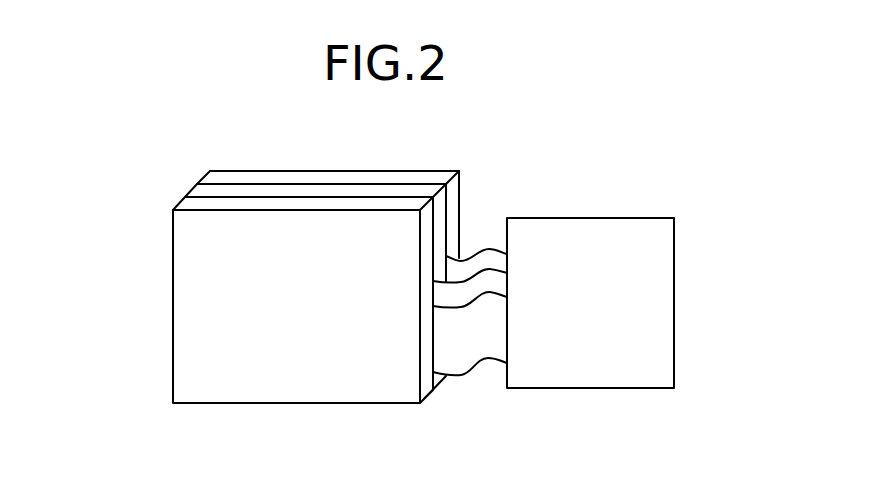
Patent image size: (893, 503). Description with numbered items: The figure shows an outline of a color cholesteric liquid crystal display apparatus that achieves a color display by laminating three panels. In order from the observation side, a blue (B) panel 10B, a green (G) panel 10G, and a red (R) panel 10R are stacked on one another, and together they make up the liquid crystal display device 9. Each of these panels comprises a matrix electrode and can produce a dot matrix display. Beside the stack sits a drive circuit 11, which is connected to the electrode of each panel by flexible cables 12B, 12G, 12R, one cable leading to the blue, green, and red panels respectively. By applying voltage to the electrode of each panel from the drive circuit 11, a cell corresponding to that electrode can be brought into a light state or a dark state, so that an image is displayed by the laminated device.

The liquid crystal display device 9 is at (146, 337).
The blue (B) panel 10B is at (177, 207).
The green (G) panel 10G is at (193, 187).
The red (R) panel 10R is at (205, 175).
The drive circuit 11 is at (675, 337).
The flexible cable 12B is at (463, 375).
The flexible cable 12G is at (463, 260).
The flexible cable 12R is at (490, 248).